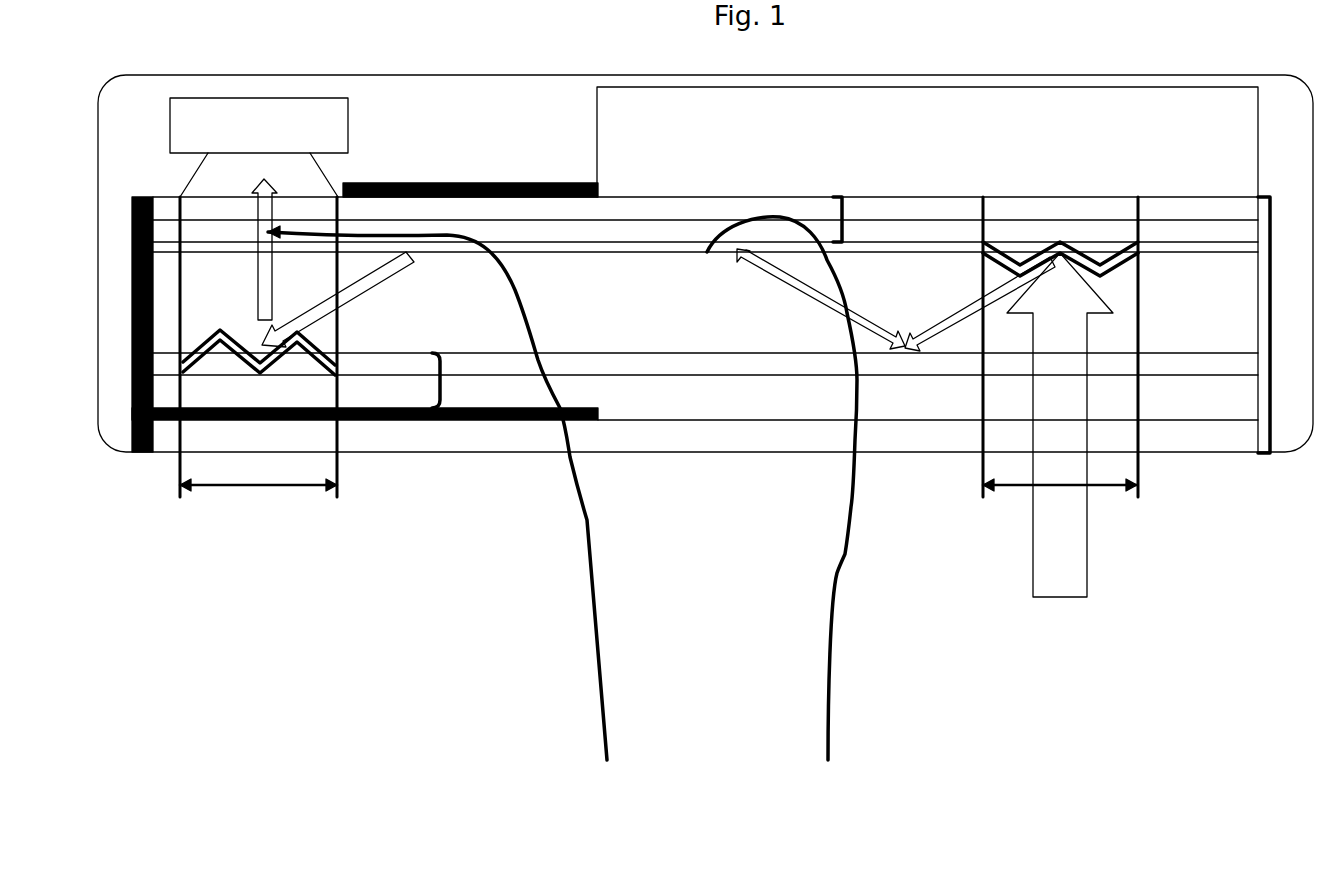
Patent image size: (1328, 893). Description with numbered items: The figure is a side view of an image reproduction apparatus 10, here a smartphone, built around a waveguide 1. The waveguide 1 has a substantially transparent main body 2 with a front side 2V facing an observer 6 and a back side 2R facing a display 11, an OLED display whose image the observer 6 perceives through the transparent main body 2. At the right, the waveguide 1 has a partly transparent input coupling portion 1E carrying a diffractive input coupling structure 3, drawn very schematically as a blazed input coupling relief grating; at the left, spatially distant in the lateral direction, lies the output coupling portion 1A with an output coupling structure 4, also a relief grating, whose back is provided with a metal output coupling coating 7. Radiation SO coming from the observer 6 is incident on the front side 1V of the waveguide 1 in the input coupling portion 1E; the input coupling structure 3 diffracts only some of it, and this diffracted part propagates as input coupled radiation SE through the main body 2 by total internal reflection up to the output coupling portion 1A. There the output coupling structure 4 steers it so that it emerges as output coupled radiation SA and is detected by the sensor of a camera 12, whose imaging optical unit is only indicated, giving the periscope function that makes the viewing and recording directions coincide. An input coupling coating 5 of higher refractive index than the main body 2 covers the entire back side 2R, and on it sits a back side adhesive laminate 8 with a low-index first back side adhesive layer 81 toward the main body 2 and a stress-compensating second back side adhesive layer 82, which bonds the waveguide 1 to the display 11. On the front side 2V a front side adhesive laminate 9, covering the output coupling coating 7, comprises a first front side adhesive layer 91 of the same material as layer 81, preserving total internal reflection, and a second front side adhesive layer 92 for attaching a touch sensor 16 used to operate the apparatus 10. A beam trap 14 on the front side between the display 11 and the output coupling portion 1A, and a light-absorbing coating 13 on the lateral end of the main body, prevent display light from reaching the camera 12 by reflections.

The waveguide 1 is at (1270, 323).
The output coupling portion 1A is at (252, 488).
The input coupling portion 1E is at (1010, 493).
The front side 1V is at (598, 452).
The main body 2 is at (672, 330).
The front side 2V is at (707, 353).
The back side 2R is at (821, 525).
The diffractive input coupling structure 3 is at (1113, 281).
The output coupling structure 4 is at (292, 343).
The input coupling coating 5 is at (1128, 253).
The observer 6 is at (1038, 632).
The output coupling coating 7 is at (216, 362).
The back side adhesive laminate 8 is at (845, 218).
The first back side adhesive layer 81 is at (893, 213).
The second back side adhesive layer 82 is at (927, 212).
The front side adhesive laminate 9 is at (443, 378).
The first front side adhesive layer 91 is at (415, 363).
The second front side adhesive layer 92 is at (385, 397).
The image reproduction apparatus 10 is at (108, 452).
The display 11 is at (1225, 173).
The camera 12 is at (343, 138).
The light-absorbing coating 13 is at (140, 452).
The beam trap 14 is at (587, 197).
The touch sensor 16 is at (173, 435).
The input coupled radiation SE is at (387, 275).
The output coupled radiation SA is at (605, 787).
The radiation from the object SO is at (1077, 525).